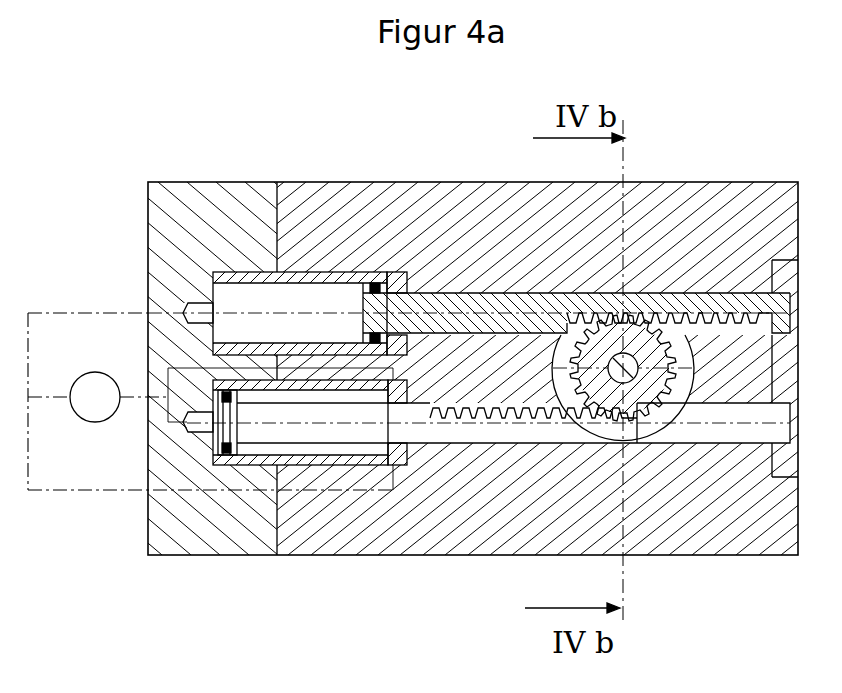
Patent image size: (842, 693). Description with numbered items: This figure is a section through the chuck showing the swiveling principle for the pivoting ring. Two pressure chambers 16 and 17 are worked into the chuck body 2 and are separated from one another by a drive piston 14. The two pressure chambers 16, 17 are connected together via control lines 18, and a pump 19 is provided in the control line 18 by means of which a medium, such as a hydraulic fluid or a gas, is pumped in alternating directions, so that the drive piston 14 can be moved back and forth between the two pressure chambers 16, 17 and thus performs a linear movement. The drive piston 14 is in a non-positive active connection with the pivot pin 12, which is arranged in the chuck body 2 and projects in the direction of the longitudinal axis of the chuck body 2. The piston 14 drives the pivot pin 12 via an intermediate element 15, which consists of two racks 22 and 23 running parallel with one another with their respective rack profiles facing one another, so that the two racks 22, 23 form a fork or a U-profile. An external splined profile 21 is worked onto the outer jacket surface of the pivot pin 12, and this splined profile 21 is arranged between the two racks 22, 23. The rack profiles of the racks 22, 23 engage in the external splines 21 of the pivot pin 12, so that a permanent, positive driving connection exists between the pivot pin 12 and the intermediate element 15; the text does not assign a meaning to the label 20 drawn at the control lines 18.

The chuck body 2 is at (337, 207).
The pivot pin 12 is at (637, 393).
The drive piston 14 is at (215, 462).
The intermediate element 15 is at (545, 420).
The pressure chamber 16 is at (320, 455).
The pressure chamber 17 is at (263, 294).
The control line 18 is at (102, 531).
The pump 19 is at (82, 418).
The pneumatic lines 20 is at (135, 390).
The external splined profile 21 is at (657, 322).
The rack 22 is at (497, 302).
The rack 23 is at (478, 432).